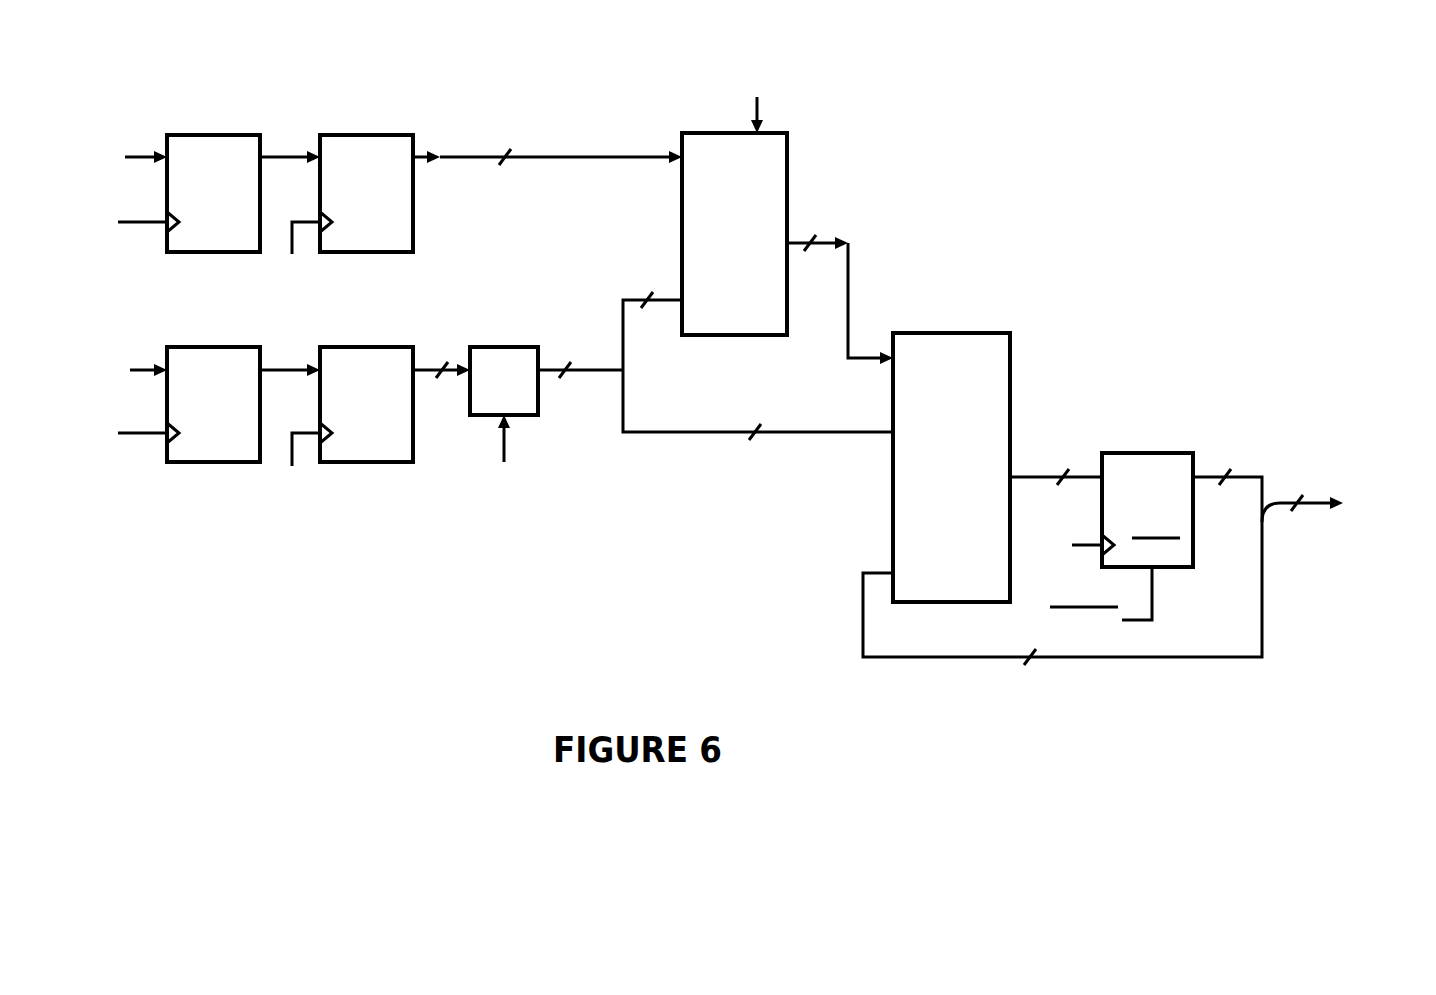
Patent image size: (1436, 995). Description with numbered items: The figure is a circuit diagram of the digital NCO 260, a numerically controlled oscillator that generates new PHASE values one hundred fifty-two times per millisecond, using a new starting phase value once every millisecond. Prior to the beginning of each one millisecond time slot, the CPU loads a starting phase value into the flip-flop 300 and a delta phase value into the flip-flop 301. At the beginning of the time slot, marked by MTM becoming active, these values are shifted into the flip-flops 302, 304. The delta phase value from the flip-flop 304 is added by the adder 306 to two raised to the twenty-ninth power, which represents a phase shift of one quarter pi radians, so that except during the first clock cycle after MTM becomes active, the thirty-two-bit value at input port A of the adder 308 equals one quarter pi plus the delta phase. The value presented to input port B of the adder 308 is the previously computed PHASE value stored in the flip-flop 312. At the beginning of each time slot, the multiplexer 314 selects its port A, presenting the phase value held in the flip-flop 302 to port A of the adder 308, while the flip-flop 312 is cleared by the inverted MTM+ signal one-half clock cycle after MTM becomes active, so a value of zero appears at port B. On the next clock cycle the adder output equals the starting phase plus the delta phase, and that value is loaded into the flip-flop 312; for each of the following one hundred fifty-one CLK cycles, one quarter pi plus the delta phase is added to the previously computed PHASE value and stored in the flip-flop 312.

The digital NCO 260 is at (328, 552).
The flip-flop 300 is at (215, 135).
The flip-flop 302 is at (367, 135).
The flip-flop 301 is at (215, 347).
The flip-flop 304 is at (367, 347).
The adder 306 is at (498, 347).
The adder 308 is at (955, 333).
The flip-flop 312 is at (1175, 453).
The multiplexer 314 is at (780, 133).